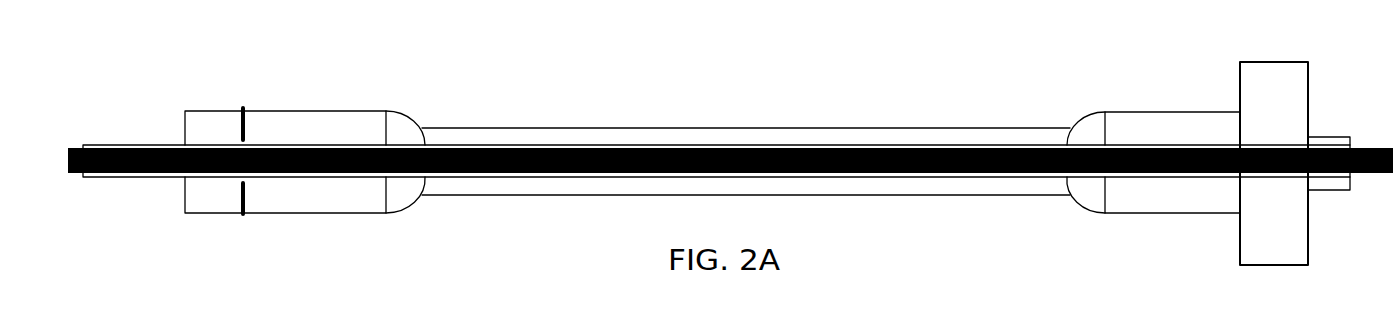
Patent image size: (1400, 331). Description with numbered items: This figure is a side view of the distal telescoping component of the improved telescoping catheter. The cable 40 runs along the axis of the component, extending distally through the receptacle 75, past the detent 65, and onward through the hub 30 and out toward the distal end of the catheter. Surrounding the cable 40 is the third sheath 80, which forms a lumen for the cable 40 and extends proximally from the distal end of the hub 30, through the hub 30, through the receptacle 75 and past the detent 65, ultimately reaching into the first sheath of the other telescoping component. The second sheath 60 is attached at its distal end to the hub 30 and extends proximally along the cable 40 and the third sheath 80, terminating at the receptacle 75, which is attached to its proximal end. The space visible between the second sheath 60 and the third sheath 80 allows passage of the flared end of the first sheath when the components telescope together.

The hub 30 is at (1150, 110).
The cable 40 is at (65, 158).
The second sheath 60 is at (533, 122).
The detent 65 is at (238, 124).
The receptacle 75 is at (272, 110).
The third sheath 80 is at (104, 143).